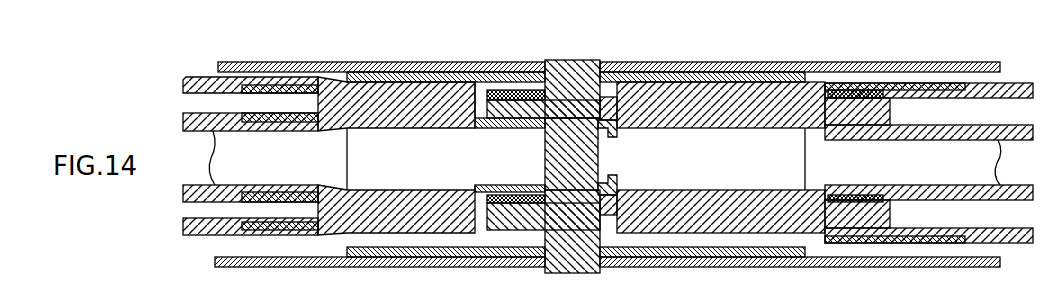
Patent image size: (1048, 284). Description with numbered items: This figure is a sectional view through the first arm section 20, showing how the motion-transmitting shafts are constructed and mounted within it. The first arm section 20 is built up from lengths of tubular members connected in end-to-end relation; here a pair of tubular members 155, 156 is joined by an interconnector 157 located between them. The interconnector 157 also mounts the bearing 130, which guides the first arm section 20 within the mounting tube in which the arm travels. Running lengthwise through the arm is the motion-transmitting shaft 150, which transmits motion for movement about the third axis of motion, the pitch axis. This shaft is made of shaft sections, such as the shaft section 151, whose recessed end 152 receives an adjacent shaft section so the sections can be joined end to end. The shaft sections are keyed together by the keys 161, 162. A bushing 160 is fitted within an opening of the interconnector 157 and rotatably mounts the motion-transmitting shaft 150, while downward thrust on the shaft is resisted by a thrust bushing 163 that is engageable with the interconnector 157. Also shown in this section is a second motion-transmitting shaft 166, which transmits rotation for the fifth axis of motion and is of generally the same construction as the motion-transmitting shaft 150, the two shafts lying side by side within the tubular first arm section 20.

The first arm section 20 is at (708, 62).
The bearing 130 is at (592, 62).
The motion-transmitting shaft 150 is at (419, 100).
The shaft section 151 is at (288, 131).
The recessed end 152 is at (273, 89).
The tubular member 155 is at (363, 70).
The tubular member 156 is at (922, 67).
The interconnector 157 is at (548, 78).
The bushing 160 is at (560, 130).
The key 161 is at (858, 88).
The key 162 is at (507, 92).
The thrust bushing 163 is at (610, 138).
The motion-transmitting shaft 166 is at (737, 198).